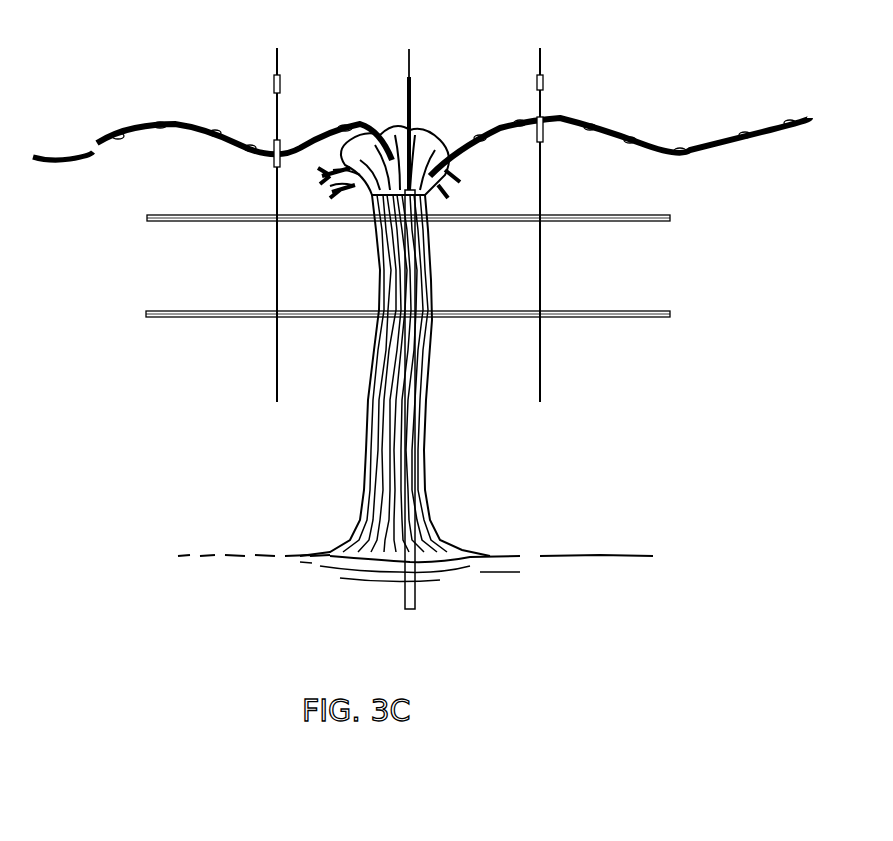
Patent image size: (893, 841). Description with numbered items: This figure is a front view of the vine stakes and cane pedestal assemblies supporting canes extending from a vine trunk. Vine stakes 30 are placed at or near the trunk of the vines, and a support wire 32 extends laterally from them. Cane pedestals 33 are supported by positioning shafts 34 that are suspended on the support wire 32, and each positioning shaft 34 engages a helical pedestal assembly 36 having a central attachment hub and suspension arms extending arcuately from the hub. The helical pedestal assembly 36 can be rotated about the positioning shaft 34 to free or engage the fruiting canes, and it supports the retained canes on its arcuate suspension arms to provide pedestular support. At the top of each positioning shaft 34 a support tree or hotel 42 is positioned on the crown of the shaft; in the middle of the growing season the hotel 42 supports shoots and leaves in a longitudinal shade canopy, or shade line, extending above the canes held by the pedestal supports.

The vine stake 30 is at (410, 480).
The support wire 32 is at (210, 215).
The cane pedestal 33 is at (546, 274).
The positioning shaft 34 is at (277, 352).
The helical pedestal assembly 36 is at (275, 162).
The support tree 42 is at (277, 49).